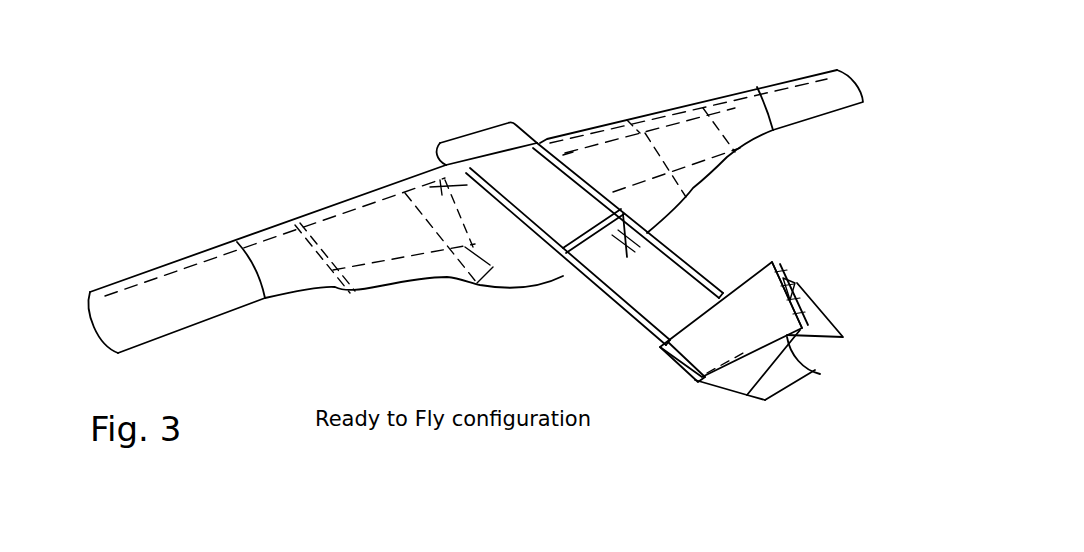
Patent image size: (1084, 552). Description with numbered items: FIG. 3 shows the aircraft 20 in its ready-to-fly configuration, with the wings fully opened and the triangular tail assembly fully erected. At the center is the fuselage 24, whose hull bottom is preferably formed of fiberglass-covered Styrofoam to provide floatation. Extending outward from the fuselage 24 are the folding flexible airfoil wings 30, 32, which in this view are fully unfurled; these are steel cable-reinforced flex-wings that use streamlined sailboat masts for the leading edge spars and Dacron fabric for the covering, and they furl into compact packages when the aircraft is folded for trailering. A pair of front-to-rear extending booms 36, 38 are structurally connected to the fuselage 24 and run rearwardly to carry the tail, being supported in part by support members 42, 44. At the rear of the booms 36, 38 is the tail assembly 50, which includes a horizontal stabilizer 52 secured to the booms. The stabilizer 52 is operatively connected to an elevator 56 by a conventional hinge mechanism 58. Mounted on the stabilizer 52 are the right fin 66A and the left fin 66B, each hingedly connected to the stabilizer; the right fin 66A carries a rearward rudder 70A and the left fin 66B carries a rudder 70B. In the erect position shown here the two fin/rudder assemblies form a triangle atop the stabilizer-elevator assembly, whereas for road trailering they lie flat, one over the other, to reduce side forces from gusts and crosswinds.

The aircraft 20 is at (200, 90).
The fuselage 24 is at (438, 163).
The folding flexible airfoil wing 30 is at (745, 115).
The folding flexible airfoil wing 32 is at (150, 293).
The boom 36 is at (667, 243).
The boom 38 is at (613, 308).
The support member 42 is at (646, 262).
The support member 44 is at (580, 288).
The tail assembly 50 is at (620, 369).
The horizontal stabilizer 52 is at (820, 374).
The elevator 56 is at (777, 383).
The hinge mechanism 58 is at (742, 357).
The right fin 66A is at (788, 292).
The left fin 66B is at (692, 348).
The rudder 70A is at (817, 320).
The rudder 70B is at (788, 286).